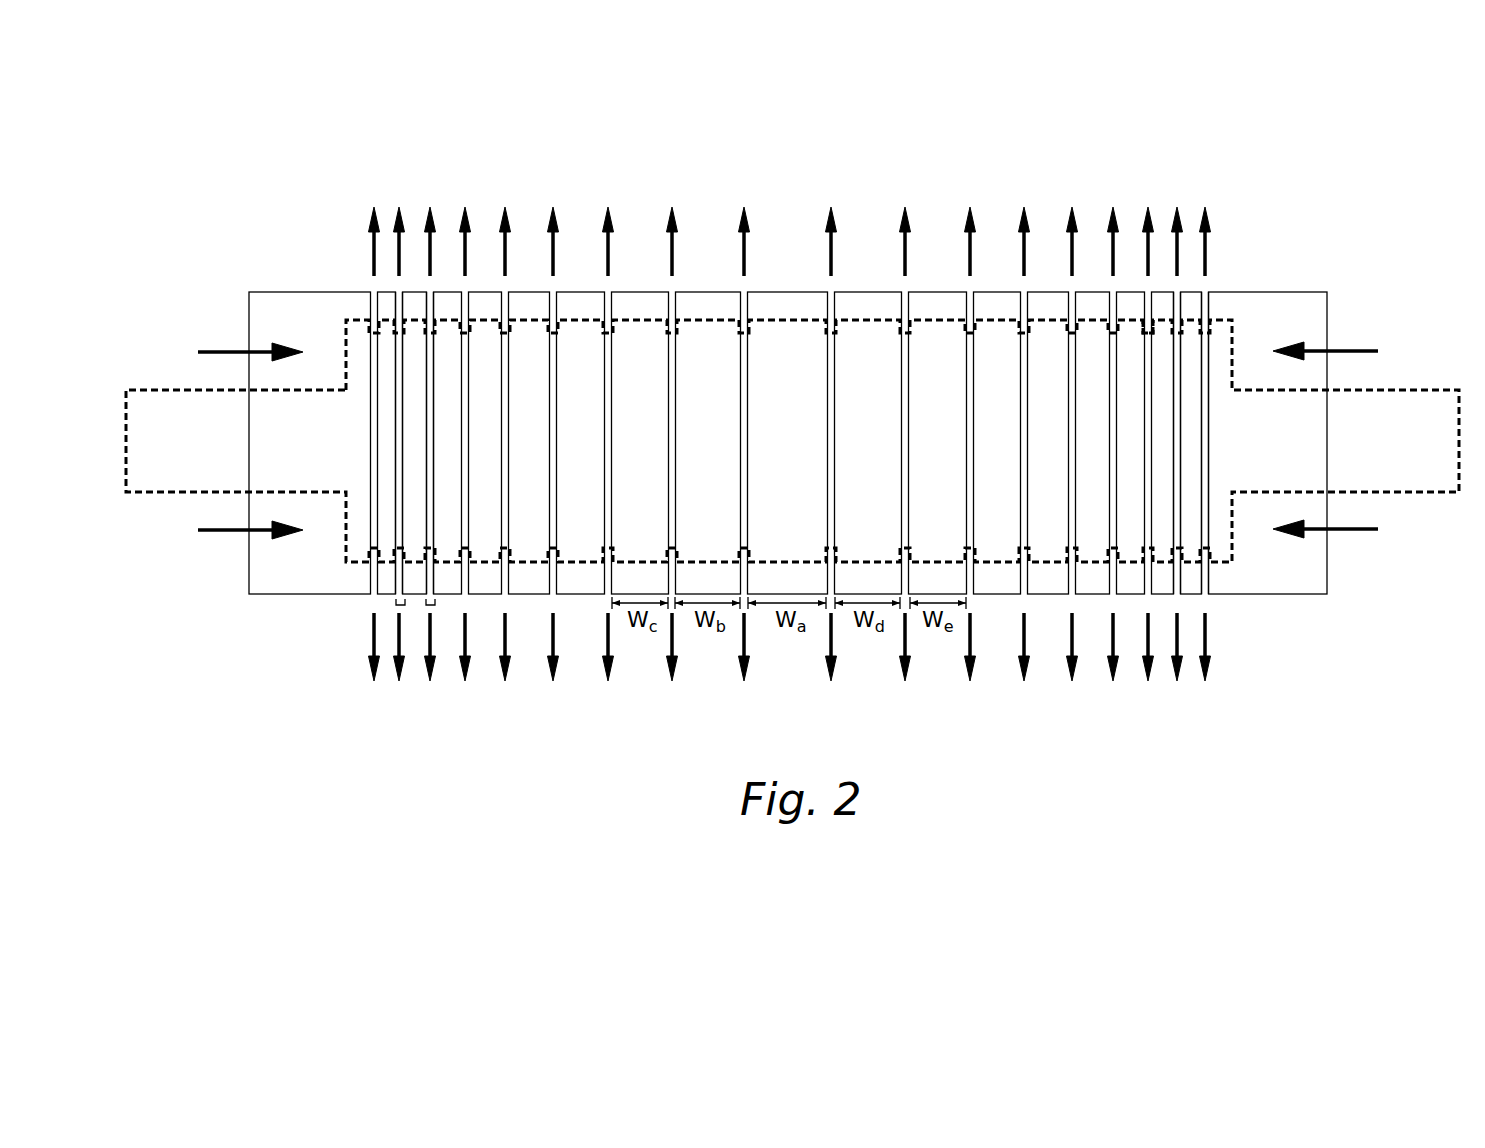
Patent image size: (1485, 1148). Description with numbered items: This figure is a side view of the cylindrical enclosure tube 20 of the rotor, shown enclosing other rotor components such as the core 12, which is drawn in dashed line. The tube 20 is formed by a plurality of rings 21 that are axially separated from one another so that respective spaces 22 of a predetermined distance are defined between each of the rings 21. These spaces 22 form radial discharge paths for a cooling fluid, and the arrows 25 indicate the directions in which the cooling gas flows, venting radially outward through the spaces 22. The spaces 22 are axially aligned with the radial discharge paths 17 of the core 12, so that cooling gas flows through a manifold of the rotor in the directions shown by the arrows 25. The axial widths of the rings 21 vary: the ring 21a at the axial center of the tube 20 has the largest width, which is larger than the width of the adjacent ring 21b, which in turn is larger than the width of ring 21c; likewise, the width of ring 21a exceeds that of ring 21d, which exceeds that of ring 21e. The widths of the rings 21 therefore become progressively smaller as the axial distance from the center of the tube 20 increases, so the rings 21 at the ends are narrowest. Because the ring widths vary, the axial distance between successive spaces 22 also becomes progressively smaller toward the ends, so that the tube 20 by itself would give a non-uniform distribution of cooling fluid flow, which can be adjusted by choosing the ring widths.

The core 12 is at (180, 475).
The radial discharge paths 17 is at (1142, 335).
The tube 20 is at (762, 494).
The rings 21 is at (420, 573).
The ring 21a is at (781, 297).
The ring 21b is at (701, 297).
The ring 21c is at (634, 297).
The ring 21d is at (861, 297).
The ring 21e is at (931, 297).
The spaces 22 is at (430, 603).
The arrows 25 is at (237, 352).